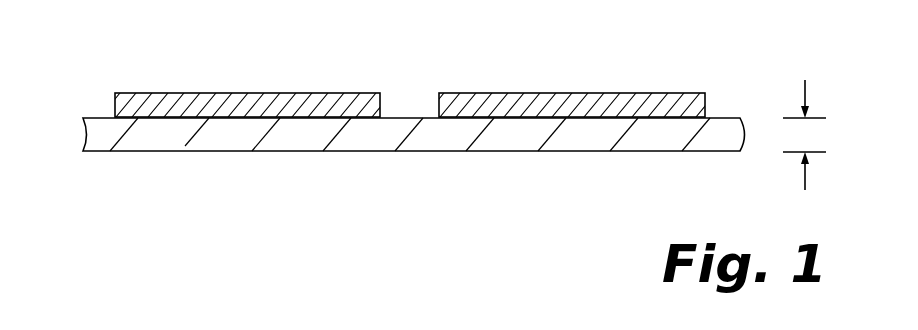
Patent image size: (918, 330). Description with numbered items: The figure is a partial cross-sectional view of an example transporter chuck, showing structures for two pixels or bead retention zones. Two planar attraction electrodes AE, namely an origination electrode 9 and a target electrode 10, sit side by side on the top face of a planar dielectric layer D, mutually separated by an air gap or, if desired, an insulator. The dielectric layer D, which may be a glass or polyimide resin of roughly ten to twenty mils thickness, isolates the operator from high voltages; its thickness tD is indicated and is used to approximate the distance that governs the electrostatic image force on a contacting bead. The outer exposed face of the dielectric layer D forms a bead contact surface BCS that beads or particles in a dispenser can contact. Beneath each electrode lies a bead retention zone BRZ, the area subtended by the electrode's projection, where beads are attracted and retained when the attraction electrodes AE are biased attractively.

The origination electrode 9 is at (138, 103).
The target electrode 10 is at (662, 93).
The dielectric layer D is at (88, 142).
The attraction electrodes AE is at (498, 75).
The bead retention zone BRZ is at (583, 158).
The bead contact surface BCS is at (599, 167).
The thickness of dielectric layer tD is at (806, 117).